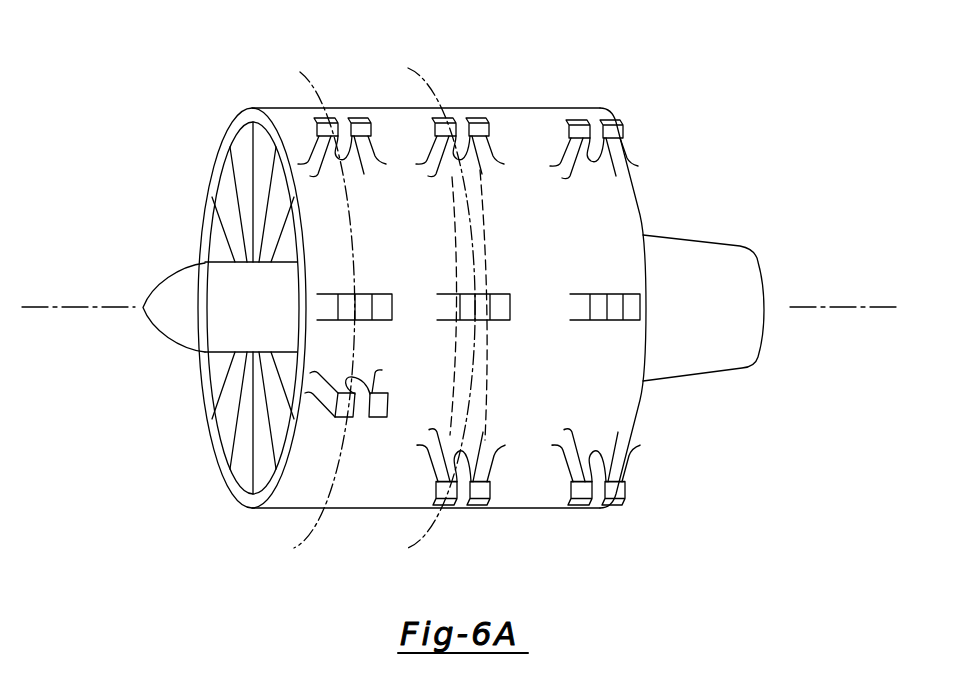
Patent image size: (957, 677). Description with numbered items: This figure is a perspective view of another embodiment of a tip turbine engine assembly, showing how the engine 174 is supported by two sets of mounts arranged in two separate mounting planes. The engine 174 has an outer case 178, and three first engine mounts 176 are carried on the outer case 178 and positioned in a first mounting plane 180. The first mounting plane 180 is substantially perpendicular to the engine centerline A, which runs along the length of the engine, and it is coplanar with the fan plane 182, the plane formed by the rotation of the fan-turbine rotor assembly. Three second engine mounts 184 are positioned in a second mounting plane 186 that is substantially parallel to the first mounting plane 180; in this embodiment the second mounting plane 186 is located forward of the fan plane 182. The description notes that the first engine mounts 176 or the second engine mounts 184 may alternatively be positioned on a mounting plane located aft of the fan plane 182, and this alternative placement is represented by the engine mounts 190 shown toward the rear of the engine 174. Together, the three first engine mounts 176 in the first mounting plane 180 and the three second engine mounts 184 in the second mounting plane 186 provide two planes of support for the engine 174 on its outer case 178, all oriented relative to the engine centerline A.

The engine 174 is at (170, 413).
The first engine mounts 176 is at (526, 305).
The outer case 178 is at (286, 509).
The first mounting plane 180 is at (413, 70).
The fan plane 182 is at (490, 350).
The second engine mounts 184 is at (388, 395).
The second mounting plane 186 is at (300, 70).
The engine mounts 190 is at (643, 300).
The engine centerline A is at (838, 309).